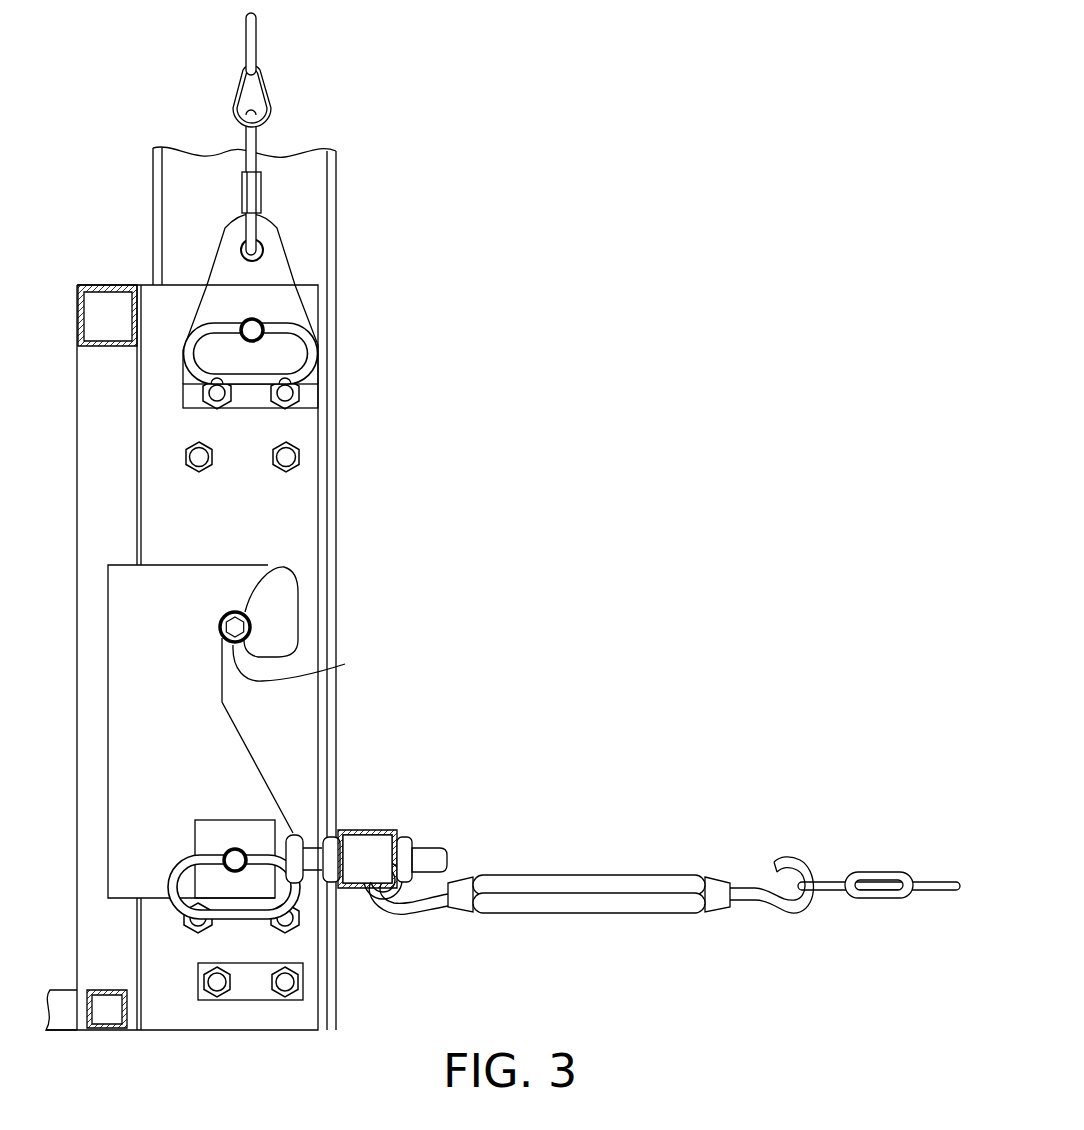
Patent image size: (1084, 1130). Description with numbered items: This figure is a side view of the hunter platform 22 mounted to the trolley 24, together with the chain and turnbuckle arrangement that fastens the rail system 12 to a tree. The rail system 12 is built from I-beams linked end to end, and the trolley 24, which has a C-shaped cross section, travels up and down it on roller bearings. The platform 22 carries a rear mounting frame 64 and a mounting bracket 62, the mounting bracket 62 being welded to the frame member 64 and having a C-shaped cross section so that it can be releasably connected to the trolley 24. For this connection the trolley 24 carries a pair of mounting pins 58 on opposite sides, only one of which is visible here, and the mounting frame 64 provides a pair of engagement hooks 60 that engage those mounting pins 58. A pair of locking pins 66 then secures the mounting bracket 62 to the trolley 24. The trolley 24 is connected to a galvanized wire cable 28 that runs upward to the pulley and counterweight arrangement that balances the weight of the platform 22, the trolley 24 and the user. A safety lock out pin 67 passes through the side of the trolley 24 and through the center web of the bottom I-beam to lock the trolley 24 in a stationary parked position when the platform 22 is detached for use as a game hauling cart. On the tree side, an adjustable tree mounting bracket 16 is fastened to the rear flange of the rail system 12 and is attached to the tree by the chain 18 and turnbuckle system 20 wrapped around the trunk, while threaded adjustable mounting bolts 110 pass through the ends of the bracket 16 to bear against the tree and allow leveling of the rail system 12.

The rail system 12 is at (360, 197).
The tree mounting bracket 16 is at (368, 830).
The chain 18 is at (882, 876).
The turnbuckle system 20 is at (590, 883).
The platform 22 is at (67, 1031).
The trolley 24 is at (305, 728).
The wire cable 28 is at (237, 88).
The mounting pin 58 is at (243, 612).
The engagement hook 60 is at (345, 664).
The mounting bracket 62 is at (300, 615).
The rear mounting frame 64 is at (107, 413).
The locking pin 66 is at (235, 855).
The safety lock out pin 67 is at (252, 330).
The adjustable mounting bolt 110 is at (427, 858).